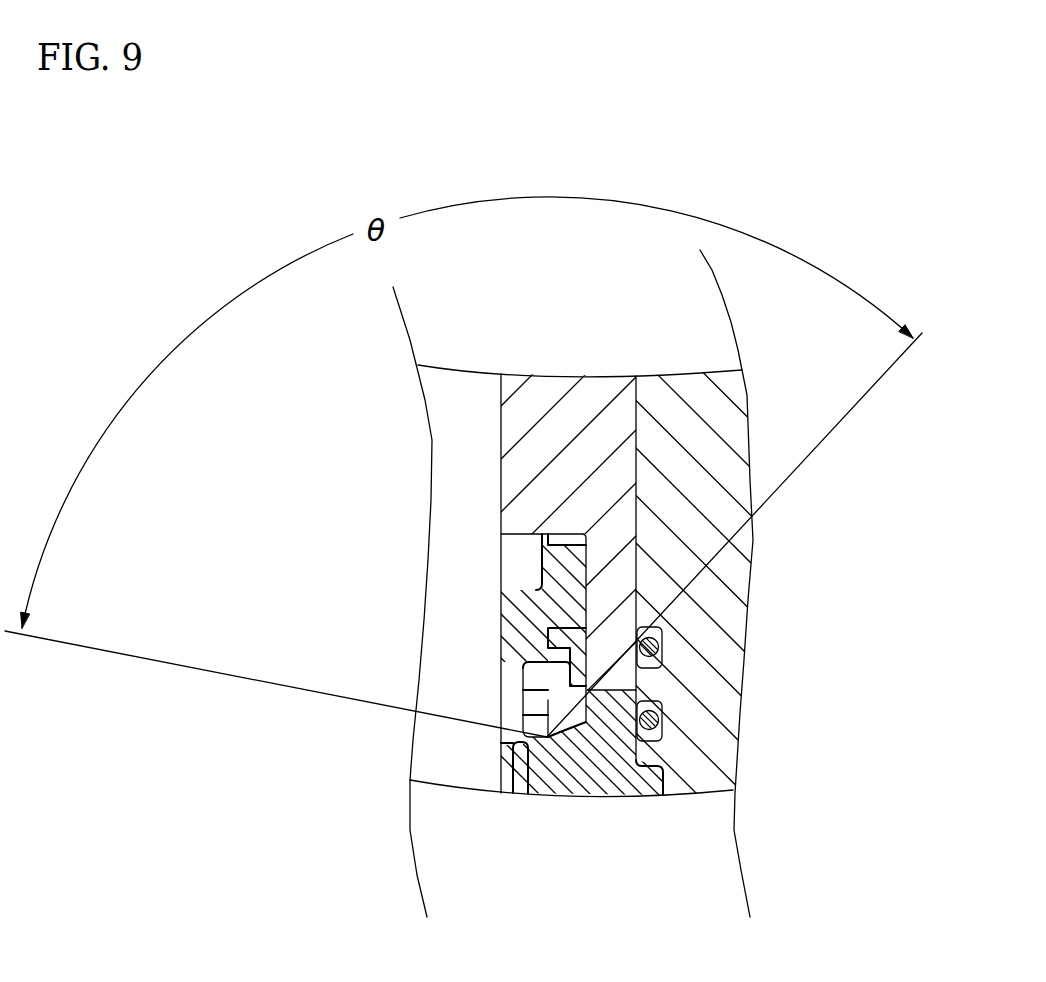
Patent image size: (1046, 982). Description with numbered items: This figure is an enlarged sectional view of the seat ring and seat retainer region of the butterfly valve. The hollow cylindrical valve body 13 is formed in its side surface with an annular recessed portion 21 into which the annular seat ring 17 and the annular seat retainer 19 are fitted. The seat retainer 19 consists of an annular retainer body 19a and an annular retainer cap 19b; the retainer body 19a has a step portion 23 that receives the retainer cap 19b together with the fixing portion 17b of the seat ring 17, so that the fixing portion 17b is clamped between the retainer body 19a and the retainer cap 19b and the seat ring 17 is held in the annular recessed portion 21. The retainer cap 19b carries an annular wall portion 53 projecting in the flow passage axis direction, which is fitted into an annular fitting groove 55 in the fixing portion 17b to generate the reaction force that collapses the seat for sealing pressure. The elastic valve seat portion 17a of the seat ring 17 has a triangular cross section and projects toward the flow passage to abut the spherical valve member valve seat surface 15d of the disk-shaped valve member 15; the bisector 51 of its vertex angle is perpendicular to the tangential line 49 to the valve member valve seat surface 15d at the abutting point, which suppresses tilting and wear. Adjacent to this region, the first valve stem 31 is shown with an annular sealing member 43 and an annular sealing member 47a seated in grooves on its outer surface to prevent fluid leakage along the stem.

The valve body 13 is at (515, 438).
The valve member 15 is at (538, 790).
The valve member valve seat surface 15d is at (514, 760).
The seat ring 17 is at (318, 718).
The valve seat portion 17a is at (500, 723).
The fixing portion 17b is at (523, 702).
The seat retainer 19 is at (318, 552).
The retainer body 19a is at (537, 589).
The retainer cap 19b is at (547, 630).
The annular recessed portion 21 is at (500, 543).
The step portion 23 is at (527, 662).
The first valve stem 31 is at (738, 560).
The annular sealing member 43 is at (662, 727).
The annular sealing member 47a is at (662, 643).
The tangential line 49 is at (503, 745).
The bisector 51 is at (558, 750).
The annular wall portion 53 is at (535, 670).
The annular fitting groove 55 is at (553, 753).